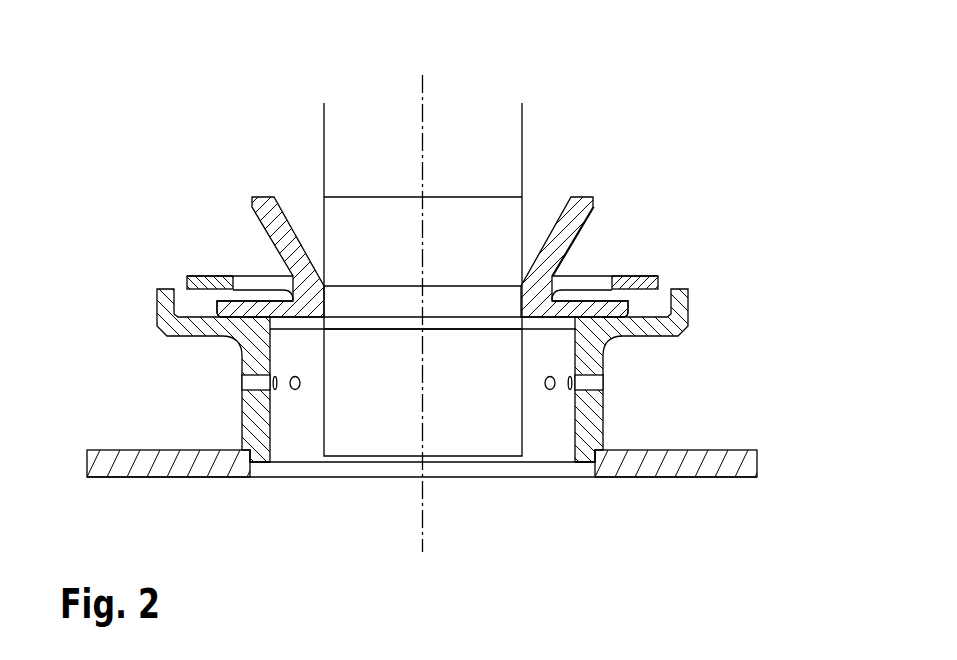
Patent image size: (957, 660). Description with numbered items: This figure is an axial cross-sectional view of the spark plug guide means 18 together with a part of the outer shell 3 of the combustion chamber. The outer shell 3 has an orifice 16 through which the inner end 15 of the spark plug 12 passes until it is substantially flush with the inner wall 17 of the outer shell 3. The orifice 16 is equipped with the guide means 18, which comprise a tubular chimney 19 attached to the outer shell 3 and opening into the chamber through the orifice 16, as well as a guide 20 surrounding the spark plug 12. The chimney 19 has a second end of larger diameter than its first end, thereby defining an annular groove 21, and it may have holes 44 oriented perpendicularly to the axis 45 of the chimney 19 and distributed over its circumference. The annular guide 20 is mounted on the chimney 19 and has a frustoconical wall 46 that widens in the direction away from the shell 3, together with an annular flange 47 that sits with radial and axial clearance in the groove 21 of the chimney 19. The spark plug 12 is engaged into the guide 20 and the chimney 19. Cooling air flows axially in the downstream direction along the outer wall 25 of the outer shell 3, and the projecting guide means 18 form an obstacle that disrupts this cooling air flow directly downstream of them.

The outer shell 3 is at (659, 492).
The spark plug 12 is at (522, 138).
The inner end 15 is at (350, 458).
The orifice 16 is at (261, 482).
The inner wall 17 is at (135, 479).
The guide means 18 is at (710, 232).
The tubular chimney 19 is at (157, 302).
The guide 20 is at (597, 219).
The groove 21 is at (184, 297).
The outer wall 25 is at (707, 450).
The holes 44 is at (596, 383).
The axis 45 is at (417, 523).
The frustoconical wall 46 is at (587, 255).
The annular flange 47 is at (252, 306).